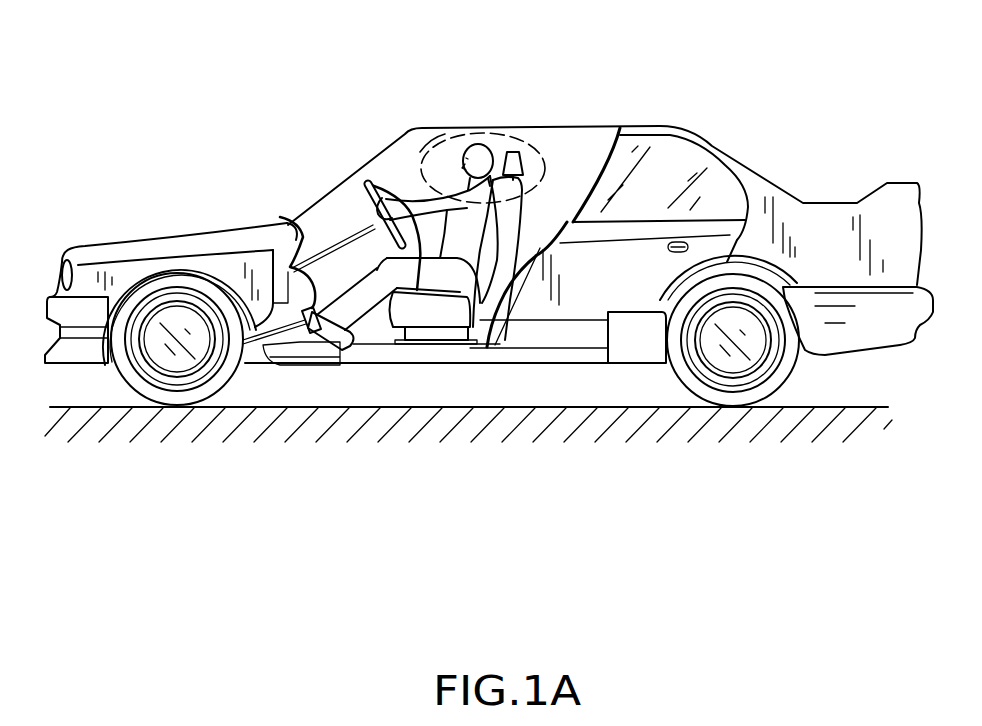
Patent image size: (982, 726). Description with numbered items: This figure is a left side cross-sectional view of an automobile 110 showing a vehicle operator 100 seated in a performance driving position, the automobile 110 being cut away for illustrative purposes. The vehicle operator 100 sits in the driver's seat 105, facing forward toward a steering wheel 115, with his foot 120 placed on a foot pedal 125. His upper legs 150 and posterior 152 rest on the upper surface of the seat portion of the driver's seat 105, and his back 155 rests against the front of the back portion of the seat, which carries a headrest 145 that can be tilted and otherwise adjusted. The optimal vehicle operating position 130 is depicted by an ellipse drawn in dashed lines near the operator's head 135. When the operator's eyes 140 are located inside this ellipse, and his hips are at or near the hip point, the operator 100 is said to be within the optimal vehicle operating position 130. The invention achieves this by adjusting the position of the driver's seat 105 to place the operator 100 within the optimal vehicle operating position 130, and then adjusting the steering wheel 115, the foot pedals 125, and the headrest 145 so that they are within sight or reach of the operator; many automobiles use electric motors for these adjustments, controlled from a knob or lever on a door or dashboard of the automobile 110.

The vehicle operator 100 is at (396, 203).
The driver's seat 105 is at (423, 313).
The automobile 110 is at (750, 112).
The steering wheel 115 is at (365, 183).
The foot 120 is at (290, 268).
The foot pedal 125 is at (306, 324).
The optimal vehicle operating position 130 is at (546, 132).
The head 135 is at (468, 146).
The eyes 140 is at (427, 136).
The headrest 145 is at (516, 150).
The upper legs 150 is at (377, 178).
The posterior 152 is at (463, 330).
The back 155 is at (492, 250).